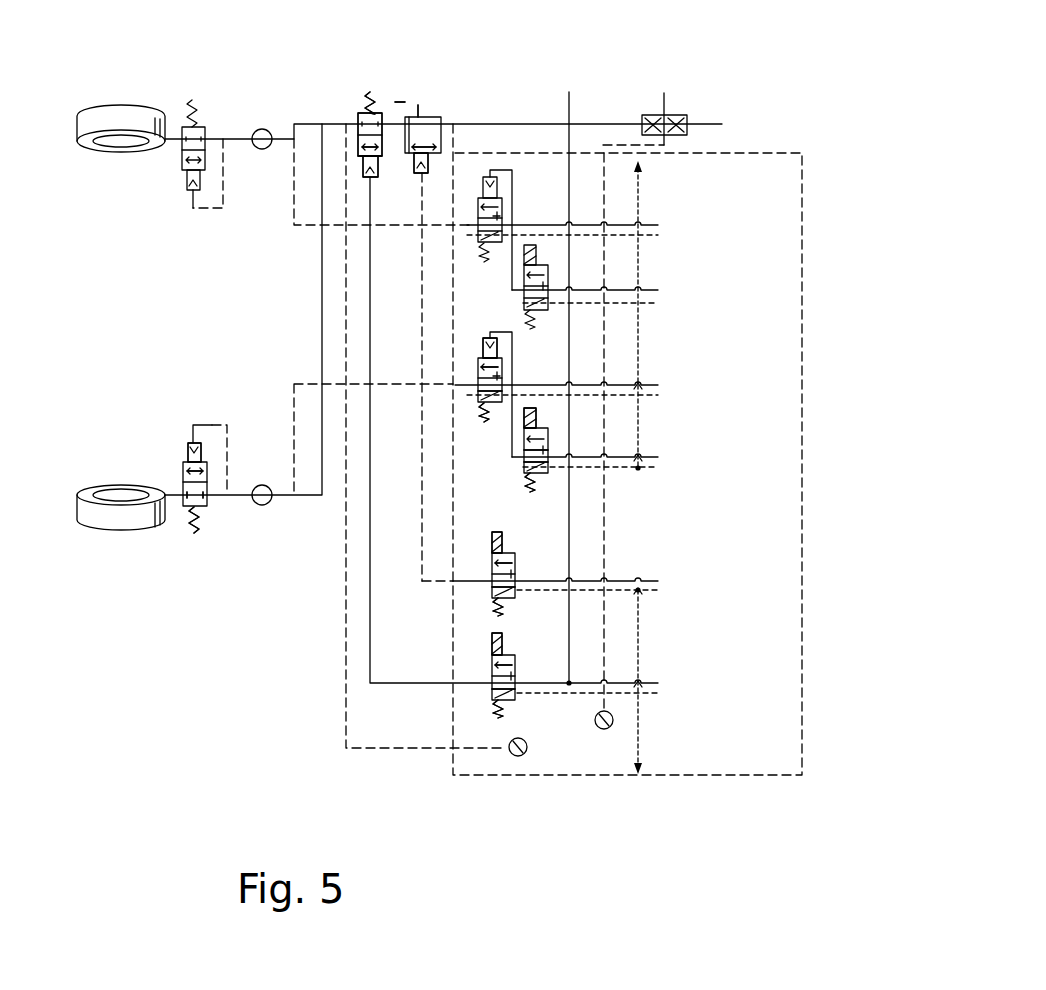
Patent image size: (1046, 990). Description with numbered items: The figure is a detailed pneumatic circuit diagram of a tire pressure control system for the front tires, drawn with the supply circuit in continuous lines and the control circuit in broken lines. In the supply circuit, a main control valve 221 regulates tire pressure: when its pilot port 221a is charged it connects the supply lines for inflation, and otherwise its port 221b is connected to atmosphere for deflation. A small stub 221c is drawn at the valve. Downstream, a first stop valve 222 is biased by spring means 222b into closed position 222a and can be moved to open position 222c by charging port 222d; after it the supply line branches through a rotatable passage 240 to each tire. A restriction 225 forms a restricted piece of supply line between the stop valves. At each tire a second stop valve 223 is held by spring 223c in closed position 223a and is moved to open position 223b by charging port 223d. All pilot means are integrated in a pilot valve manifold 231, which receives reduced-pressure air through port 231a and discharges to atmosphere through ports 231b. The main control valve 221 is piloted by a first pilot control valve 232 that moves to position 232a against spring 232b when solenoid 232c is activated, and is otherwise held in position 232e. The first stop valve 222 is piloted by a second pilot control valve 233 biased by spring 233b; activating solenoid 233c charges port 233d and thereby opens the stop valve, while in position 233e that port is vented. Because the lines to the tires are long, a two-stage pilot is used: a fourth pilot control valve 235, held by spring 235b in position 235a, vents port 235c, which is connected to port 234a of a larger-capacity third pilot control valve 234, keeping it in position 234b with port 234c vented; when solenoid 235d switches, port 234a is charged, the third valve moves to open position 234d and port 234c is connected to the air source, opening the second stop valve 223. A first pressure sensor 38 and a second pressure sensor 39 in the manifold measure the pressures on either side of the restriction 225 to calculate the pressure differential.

The first pressure sensor 38 is at (525, 752).
The second pressure sensor 39 is at (612, 718).
The main control valve 221 is at (427, 130).
The port of main control valve 221a is at (430, 168).
The port of main control valve 221b is at (442, 148).
The port of control valve 221c is at (420, 105).
The first stop valve 222 is at (358, 126).
The closed position of first stop valve 222a is at (372, 120).
The spring means of first stop valve 222b is at (370, 96).
The open position of first stop valve 222c is at (385, 157).
The port of first stop valve 222d is at (368, 176).
The second stop valve 223 is at (182, 152).
The closed position of second stop valve 223a is at (207, 502).
The open position of second stop valve 223b is at (207, 470).
The spring of second stop valve 223c is at (195, 527).
The port of second stop valve 223d is at (185, 448).
The restriction 225 is at (688, 117).
The pilot valve manifold 231 is at (803, 183).
The port of pilot valve manifold 231a is at (572, 150).
The port of pilot valve manifold 231b is at (640, 192).
The first pilot control valve 232 is at (493, 563).
The position of first pilot control valve 232a is at (515, 559).
The spring of first pilot control valve 232b is at (505, 606).
The solenoid of first pilot control valve 232c is at (502, 537).
The second position of first pilot control valve 232e is at (493, 590).
The second pilot control valve 233 is at (515, 658).
The spring of second pilot control valve 233b is at (495, 710).
The solenoid of second pilot control valve 233c is at (502, 633).
The port of second pilot control valve 233d is at (493, 687).
The second position of second pilot control valve 233e is at (493, 663).
The third pilot control valve 234 is at (501, 203).
The port of third pilot control valve 234a is at (483, 357).
The position of third pilot control valve 234b is at (480, 398).
The port of third pilot control valve 234c is at (480, 390).
The open position of third pilot control valve 234d is at (485, 380).
The fourth pilot control valve 235 is at (550, 274).
The position of fourth pilot control valve 235a is at (541, 472).
The spring of fourth pilot control valve 235b is at (528, 493).
The port of fourth pilot control valve 235c is at (524, 460).
The solenoid of fourth pilot control valve 235d is at (532, 418).
The rotatable passage 240 is at (266, 129).